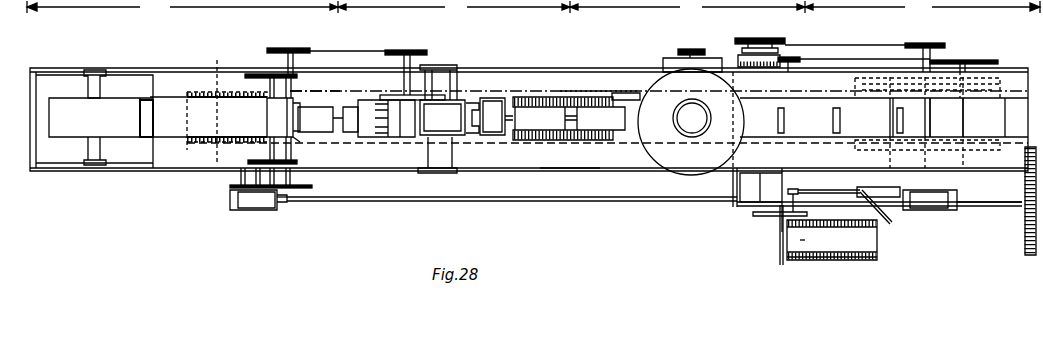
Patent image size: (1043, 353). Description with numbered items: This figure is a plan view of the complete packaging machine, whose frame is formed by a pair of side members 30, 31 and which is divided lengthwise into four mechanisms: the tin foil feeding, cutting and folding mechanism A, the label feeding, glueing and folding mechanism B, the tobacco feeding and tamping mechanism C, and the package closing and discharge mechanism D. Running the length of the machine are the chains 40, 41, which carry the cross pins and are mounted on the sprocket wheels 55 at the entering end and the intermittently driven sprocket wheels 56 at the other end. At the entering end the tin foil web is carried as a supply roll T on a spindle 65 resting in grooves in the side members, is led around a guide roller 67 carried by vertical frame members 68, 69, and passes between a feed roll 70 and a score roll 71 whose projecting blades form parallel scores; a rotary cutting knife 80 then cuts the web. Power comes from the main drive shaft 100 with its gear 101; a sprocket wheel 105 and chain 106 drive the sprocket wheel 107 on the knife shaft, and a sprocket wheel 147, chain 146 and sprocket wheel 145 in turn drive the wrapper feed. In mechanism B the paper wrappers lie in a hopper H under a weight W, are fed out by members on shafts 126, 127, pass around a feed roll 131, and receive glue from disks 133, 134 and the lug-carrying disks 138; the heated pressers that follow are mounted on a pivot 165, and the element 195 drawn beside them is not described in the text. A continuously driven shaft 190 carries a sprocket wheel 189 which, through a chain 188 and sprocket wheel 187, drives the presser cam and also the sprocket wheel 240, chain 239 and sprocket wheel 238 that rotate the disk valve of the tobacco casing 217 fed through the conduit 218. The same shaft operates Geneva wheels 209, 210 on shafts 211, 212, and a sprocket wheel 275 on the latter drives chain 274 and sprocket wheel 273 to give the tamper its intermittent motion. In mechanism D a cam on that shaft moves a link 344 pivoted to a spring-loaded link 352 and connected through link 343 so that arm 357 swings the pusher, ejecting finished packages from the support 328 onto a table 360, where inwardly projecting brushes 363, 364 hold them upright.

The tin foil feeding, cutting and folding mechanism A is at (186, 9).
The label feeding, glueing and folding mechanism B is at (458, 9).
The tobacco feeding and tamping mechanism C is at (691, 9).
The package closing and discharge mechanism D is at (922, 9).
The supply roll T is at (82, 128).
The side member 30 is at (165, 66).
The side member 31 is at (133, 166).
The sprocket wheel 55 is at (198, 90).
The spindle 65 is at (88, 86).
The guide roller 67 is at (294, 91).
The vertical frame member 68 is at (252, 73).
The vertical frame member 69 is at (252, 163).
The feed roll 70 is at (298, 119).
The score roll 71 is at (266, 118).
The rotary cutting knife 80 is at (297, 140).
The main drive shaft 100 is at (1003, 207).
The gear 101 is at (1022, 246).
The sprocket wheel 105 is at (232, 190).
The chain 106 is at (312, 186).
The sprocket wheel 107 is at (300, 190).
The shaft 126 is at (450, 108).
The shaft 127 is at (436, 65).
The feed roll 131 is at (405, 129).
The glue disk 133 is at (385, 96).
The glue disk 134 is at (375, 137).
The disk 138 is at (386, 118).
The sprocket wheel 145 is at (402, 50).
The chain 146 is at (349, 51).
The sprocket wheel 147 is at (300, 42).
The pivot 165 is at (496, 97).
The sprocket wheel 187 is at (746, 38).
The chain 188 is at (857, 44).
The sprocket wheel 189 is at (928, 43).
The shaft 190 is at (931, 132).
The toothed unit 195 is at (536, 97).
The Geneva wheel 209 is at (798, 120).
The Geneva wheel 210 is at (978, 58).
The shaft 211 is at (888, 123).
The shaft 212 is at (964, 131).
The casing 217 is at (678, 160).
The feed conduit 218 is at (677, 134).
The sprocket wheel 238 is at (670, 54).
The chain 239 is at (722, 54).
The sprocket wheel 240 is at (778, 50).
The sprocket wheel 273 is at (801, 60).
The chain 274 is at (875, 58).
The sprocket wheel 275 is at (987, 58).
The support 328 is at (781, 266).
The link 343 is at (795, 189).
The link 344 is at (889, 215).
The link 352 is at (882, 187).
The arm 357 is at (958, 205).
The table 360 is at (870, 247).
The brush 363 is at (814, 259).
The brush 364 is at (824, 244).
The hopper H is at (450, 102).
The weight W is at (470, 134).
The chain 40 is at (570, 182).
The chain 41 is at (597, 90).
The sprocket wheel 56 is at (855, 94).